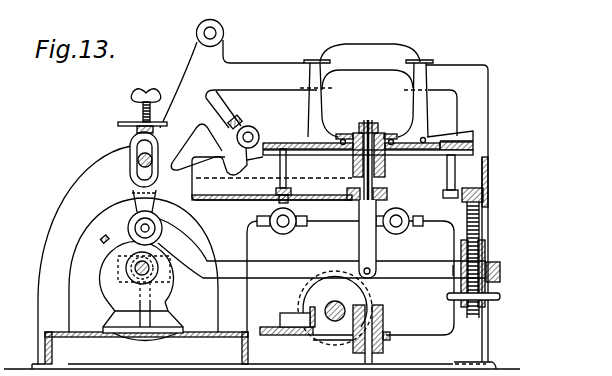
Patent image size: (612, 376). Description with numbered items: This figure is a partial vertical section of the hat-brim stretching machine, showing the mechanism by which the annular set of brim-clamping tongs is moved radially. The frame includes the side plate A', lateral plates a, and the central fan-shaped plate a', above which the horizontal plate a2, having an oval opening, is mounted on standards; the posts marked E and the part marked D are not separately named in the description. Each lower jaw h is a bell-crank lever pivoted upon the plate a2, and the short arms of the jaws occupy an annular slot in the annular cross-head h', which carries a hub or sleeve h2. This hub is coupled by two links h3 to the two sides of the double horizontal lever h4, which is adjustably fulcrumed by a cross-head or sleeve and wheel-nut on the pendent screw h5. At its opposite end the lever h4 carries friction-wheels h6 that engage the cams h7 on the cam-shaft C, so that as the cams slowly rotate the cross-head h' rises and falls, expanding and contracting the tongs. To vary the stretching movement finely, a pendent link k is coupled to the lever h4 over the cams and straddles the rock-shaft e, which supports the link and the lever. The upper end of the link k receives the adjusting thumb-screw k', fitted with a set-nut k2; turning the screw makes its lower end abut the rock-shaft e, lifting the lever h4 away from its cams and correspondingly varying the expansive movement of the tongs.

The side plate A' is at (262, 217).
The cam-shaft C is at (150, 271).
The shaft D is at (327, 306).
The supporting posts E is at (365, 88).
The lateral plate a is at (306, 328).
The central fan-shaped plate a' is at (272, 178).
The horizontal plate a2 is at (473, 145).
The rock-shaft e is at (135, 154).
The lower jaw h is at (363, 77).
The annular cross-head h' is at (366, 158).
The hub or sleeve h2 is at (385, 160).
The link h3 is at (369, 244).
The double horizontal lever h4 is at (329, 250).
The pendent screw h5 is at (481, 226).
The friction-wheel h6 is at (158, 224).
The cam h7 is at (109, 250).
The pendent link k is at (153, 156).
The adjusting thumb-screw k' is at (146, 94).
The set-nut k2 is at (128, 123).